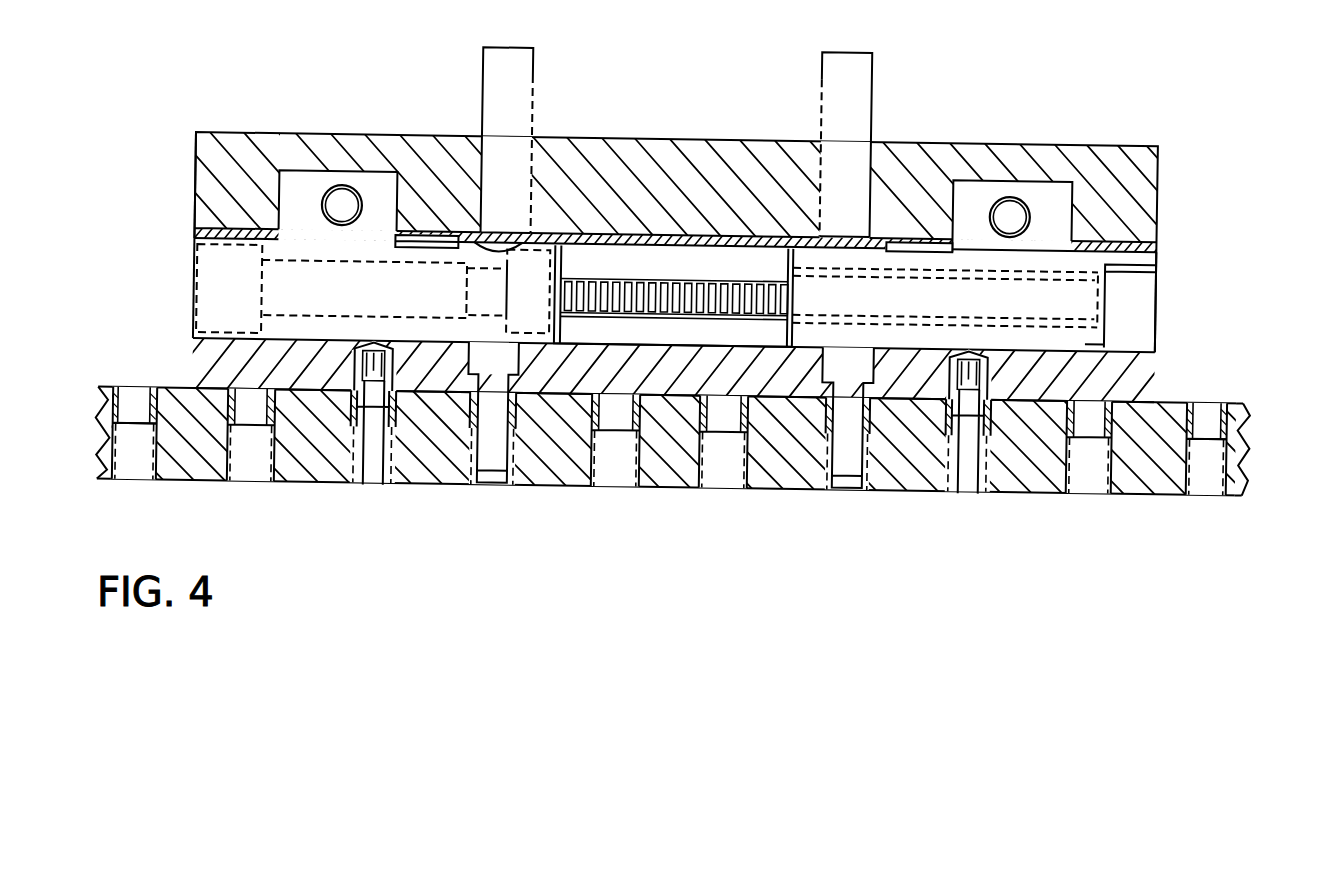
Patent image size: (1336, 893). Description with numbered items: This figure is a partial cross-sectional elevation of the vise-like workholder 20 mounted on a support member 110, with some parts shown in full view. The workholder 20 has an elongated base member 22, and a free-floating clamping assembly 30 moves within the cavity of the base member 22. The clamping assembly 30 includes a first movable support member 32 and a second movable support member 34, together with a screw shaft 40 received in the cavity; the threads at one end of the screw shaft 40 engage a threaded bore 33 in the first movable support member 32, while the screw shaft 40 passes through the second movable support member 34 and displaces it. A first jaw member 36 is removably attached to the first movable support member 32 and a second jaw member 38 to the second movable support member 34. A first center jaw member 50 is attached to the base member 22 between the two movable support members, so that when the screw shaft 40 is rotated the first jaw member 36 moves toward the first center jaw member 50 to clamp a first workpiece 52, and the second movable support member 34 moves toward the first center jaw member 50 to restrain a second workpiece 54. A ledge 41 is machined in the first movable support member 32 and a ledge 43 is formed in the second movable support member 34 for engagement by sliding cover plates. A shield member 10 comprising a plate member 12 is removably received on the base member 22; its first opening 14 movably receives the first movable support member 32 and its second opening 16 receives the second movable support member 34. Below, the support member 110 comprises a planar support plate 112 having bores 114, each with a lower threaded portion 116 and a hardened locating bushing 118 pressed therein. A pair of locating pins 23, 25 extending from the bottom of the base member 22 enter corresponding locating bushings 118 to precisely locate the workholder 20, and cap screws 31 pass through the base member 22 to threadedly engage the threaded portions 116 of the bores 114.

The shield member 10 is at (191, 226).
The plate member 12 is at (1158, 236).
The first opening 14 is at (453, 228).
The second opening 16 is at (897, 230).
The vise-like workholder 20 is at (1175, 273).
The base member 22 is at (1137, 359).
The locating pin 23 is at (370, 403).
The locating pin 25 is at (967, 404).
The clamping assembly 30 is at (189, 293).
The cap screw 31 is at (492, 467).
The first movable support member 32 is at (211, 268).
The threaded bore 33 is at (332, 256).
The second movable support member 34 is at (1107, 333).
The first jaw member 36 is at (247, 150).
The second jaw member 38 is at (1098, 152).
The screw shaft 40 is at (663, 300).
The ledge 41 is at (542, 228).
The ledge 43 is at (923, 232).
The first center jaw member 50 is at (680, 148).
The first workpiece 52 is at (514, 78).
The second workpiece 54 is at (857, 63).
The support member 110 is at (207, 483).
The support plate 112 is at (421, 475).
The bore 114 is at (131, 386).
The threaded portion 116 is at (149, 467).
The locating bushing 118 is at (146, 400).